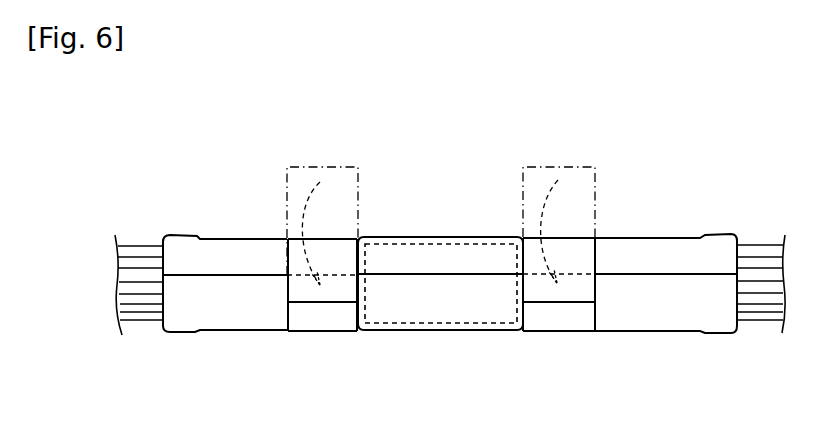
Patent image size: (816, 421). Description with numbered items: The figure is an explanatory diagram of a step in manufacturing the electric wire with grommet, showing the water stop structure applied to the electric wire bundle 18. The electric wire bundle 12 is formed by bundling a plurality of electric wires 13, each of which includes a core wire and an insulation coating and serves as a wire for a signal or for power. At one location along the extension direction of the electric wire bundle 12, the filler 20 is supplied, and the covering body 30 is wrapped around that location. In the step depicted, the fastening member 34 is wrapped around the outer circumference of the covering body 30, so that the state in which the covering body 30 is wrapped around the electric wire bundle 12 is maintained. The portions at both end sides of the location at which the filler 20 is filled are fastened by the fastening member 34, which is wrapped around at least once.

The electric wire bundle 18 is at (416, 194).
The electric wire bundle 12 is at (758, 244).
The electric wire 13 is at (770, 308).
The filler 20 is at (468, 323).
The covering body 30 is at (394, 331).
The fastening member 34 is at (321, 333).